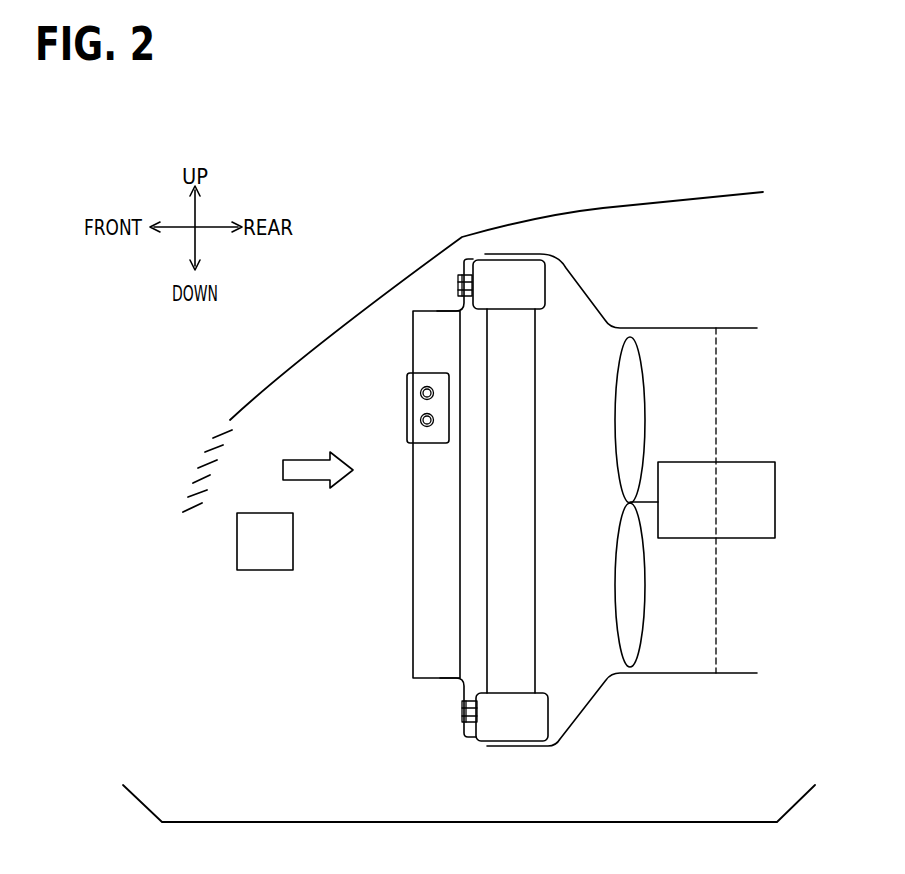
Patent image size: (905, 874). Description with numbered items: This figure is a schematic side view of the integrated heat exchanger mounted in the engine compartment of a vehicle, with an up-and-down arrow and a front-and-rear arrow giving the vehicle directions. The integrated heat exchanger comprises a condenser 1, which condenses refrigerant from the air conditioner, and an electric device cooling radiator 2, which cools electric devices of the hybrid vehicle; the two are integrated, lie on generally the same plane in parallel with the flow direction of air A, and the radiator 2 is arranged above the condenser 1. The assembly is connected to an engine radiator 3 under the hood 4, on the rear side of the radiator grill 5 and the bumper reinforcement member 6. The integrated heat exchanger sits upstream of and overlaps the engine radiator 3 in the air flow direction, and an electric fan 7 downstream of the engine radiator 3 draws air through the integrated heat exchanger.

The condenser 1 is at (428, 633).
The electric device cooling radiator 2 is at (425, 362).
The engine radiator 3 is at (513, 375).
The hood 4 is at (533, 220).
The radiator grill 5 is at (210, 448).
The bumper reinforcement member 6 is at (257, 553).
The electric fan 7 is at (630, 422).
The flow direction of air A is at (310, 457).